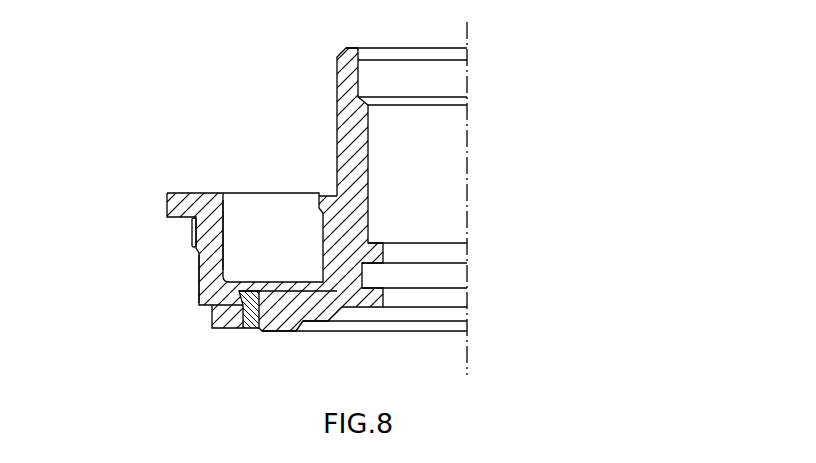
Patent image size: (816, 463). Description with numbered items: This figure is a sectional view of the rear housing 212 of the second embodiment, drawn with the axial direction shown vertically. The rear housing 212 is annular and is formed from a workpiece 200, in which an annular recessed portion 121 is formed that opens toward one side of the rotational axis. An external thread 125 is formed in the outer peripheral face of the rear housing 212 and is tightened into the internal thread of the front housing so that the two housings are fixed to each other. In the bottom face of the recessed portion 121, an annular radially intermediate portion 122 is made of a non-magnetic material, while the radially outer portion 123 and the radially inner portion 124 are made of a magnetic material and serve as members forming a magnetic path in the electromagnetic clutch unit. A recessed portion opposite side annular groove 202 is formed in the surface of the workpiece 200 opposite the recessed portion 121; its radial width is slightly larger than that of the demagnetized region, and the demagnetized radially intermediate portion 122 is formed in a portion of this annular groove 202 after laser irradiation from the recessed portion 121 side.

The rear housing 212 is at (143, 102).
The workpiece 200 is at (183, 191).
The recessed portion 121 is at (227, 232).
The external thread 125 is at (192, 234).
The radially outer portion 123 is at (208, 277).
The radially intermediate portion 122 is at (236, 305).
The recessed portion opposite side annular groove 202 is at (248, 328).
The radially inner portion 124 is at (313, 308).